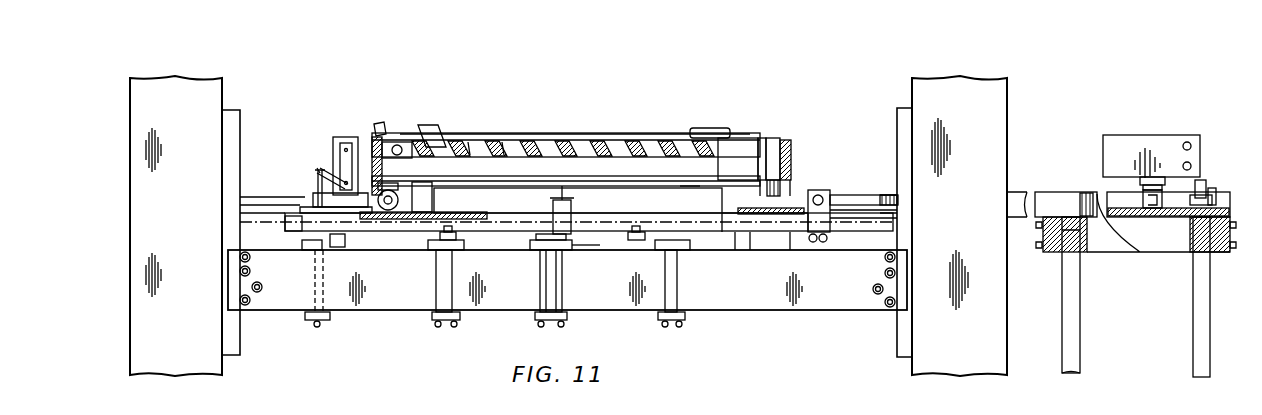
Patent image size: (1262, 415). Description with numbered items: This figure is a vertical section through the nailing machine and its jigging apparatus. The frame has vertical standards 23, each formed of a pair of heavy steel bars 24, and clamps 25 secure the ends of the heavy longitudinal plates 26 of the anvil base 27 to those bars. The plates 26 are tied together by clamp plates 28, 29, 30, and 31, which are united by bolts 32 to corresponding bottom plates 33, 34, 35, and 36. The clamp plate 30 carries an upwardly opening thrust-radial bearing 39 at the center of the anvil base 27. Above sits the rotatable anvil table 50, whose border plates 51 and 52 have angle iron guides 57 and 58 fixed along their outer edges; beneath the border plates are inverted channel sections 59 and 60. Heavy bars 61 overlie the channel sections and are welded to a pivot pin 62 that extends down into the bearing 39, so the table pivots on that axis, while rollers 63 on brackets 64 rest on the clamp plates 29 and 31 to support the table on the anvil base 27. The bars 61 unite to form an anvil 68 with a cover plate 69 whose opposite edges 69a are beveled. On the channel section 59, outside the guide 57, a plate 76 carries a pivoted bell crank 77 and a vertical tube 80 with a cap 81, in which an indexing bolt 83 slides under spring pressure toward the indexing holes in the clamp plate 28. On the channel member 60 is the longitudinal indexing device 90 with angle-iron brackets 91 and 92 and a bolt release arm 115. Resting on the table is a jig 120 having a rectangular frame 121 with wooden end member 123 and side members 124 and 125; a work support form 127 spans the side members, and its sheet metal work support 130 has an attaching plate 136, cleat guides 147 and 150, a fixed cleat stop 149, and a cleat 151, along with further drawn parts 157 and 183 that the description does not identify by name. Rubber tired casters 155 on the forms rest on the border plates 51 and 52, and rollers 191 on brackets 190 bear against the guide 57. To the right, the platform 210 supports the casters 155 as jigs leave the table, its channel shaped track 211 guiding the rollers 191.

The vertical standard 23 is at (132, 268).
The steel bar 24 is at (240, 208).
The clamp 25 is at (243, 283).
The longitudinal plate 26 is at (815, 298).
The anvil base 27 is at (757, 292).
The clamp plate 28 is at (308, 248).
The clamp plate 29 is at (464, 245).
The clamp plate 30 is at (576, 248).
The clamp plate 31 is at (690, 245).
The bolt 32 is at (310, 296).
The bottom plate 33 is at (325, 322).
The bottom plate 34 is at (456, 320).
The bottom plate 35 is at (560, 320).
The bottom plate 36 is at (667, 322).
The thrust-radial bearing 39 is at (540, 242).
The rotatable anvil table 50 is at (735, 238).
The border plate 51 is at (412, 222).
The border plate 52 is at (750, 236).
The angle iron guide 57 is at (262, 197).
The angle iron guide 58 is at (790, 214).
The inverted channel section 59 is at (285, 228).
The inverted channel section 60 is at (792, 236).
The heavy bar 61 is at (434, 204).
The pivot pin 62 is at (553, 207).
The roller 63 is at (440, 237).
The bracket 64 is at (470, 213).
The anvil 68 is at (636, 184).
The cover plate 69 is at (432, 186).
The beveled edge 69a is at (688, 186).
The plate 76 is at (304, 212).
The bell crank 77 is at (318, 186).
The vertical tube 80 is at (333, 170).
The cap 81 is at (340, 137).
The indexing bolt 83 is at (345, 240).
The longitudinal indexing device 90 is at (821, 189).
The angle-iron bracket 91 is at (782, 190).
The angle-iron bracket 92 is at (765, 190).
The bolt release arm 115 is at (858, 196).
The jig 120 is at (813, 178).
The rectangular frame 121 is at (748, 134).
The end member 123 is at (1125, 150).
The side member 124 is at (377, 137).
The side member 125 is at (792, 152).
The work support form 127 is at (603, 134).
The sheet metal work support 130 is at (589, 177).
The attaching plate 136 is at (772, 138).
The cleat guide 147 is at (440, 130).
The fixed cleat stop 149 is at (386, 140).
The cleat guide 150 is at (710, 128).
The cleat 151 is at (566, 133).
The rubber tired caster 155 is at (388, 190).
The hook 157 is at (400, 130).
The hatched segments 183 is at (505, 140).
The bracket 190 is at (350, 143).
The roller 191 is at (1210, 192).
The platform 210 is at (1138, 258).
The channel shaped track 211 is at (1216, 200).